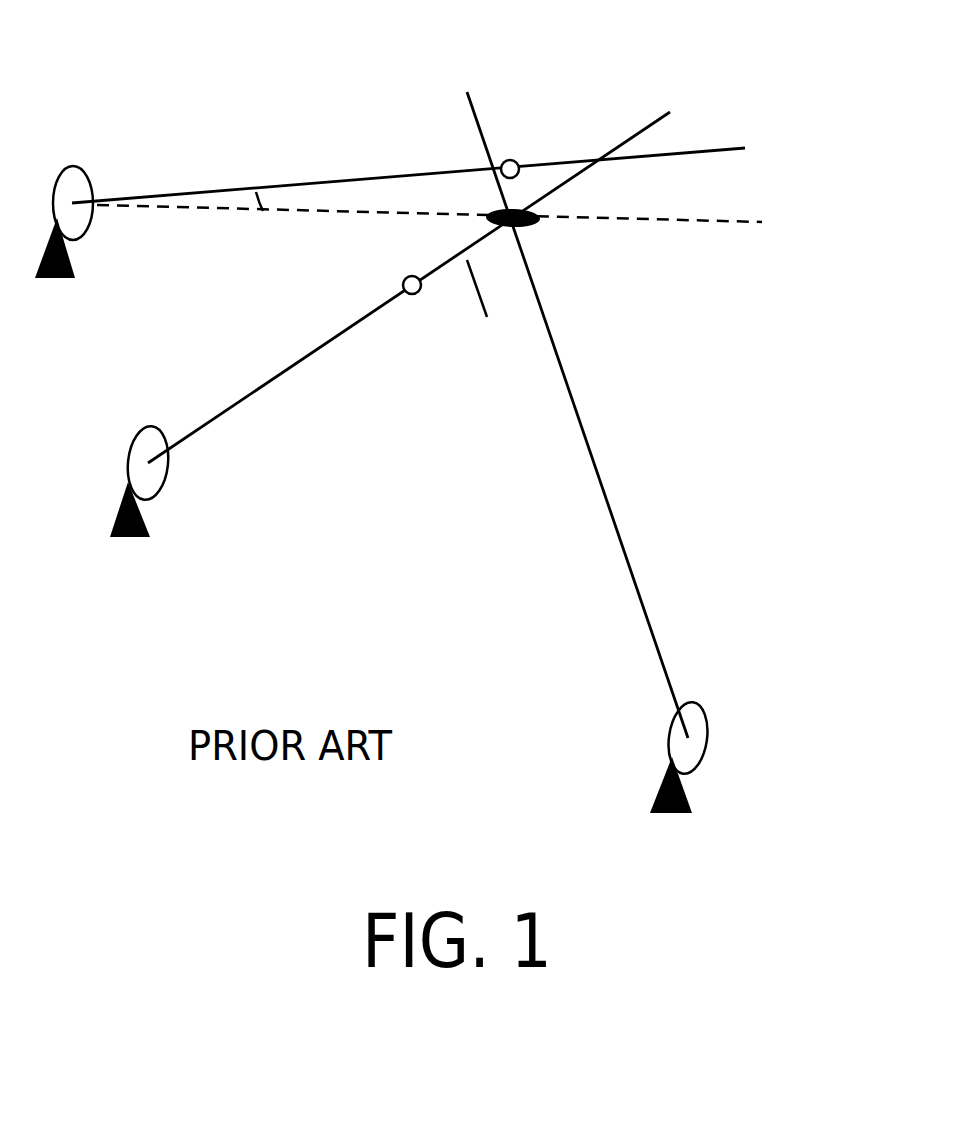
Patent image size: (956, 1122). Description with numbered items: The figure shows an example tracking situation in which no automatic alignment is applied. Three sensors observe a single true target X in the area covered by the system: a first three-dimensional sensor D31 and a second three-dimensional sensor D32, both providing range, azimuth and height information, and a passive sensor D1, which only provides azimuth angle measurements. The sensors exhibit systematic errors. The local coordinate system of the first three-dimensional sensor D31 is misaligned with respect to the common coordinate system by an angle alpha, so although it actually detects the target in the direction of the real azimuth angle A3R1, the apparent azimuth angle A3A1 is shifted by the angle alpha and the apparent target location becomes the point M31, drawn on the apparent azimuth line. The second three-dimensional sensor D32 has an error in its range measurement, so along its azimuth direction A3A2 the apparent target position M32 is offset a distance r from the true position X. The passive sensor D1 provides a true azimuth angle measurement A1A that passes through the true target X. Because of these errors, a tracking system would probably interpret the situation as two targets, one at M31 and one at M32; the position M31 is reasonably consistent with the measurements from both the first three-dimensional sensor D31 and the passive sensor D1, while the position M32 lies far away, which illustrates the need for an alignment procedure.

The first 3D sensor D31 is at (64, 261).
The second 3D sensor D32 is at (141, 518).
The passive sensor D1 is at (681, 786).
The azimuth angle of the passive sensor A1A is at (550, 384).
The azimuth angle of the second 3D sensor A3A2 is at (430, 256).
The apparent azimuth angle of the first 3D sensor A3A1 is at (448, 163).
The real azimuth angle of the first 3D sensor A3R1 is at (470, 232).
The misalignment angle alpha is at (282, 198).
The apparent target location of the first 3D sensor M31 is at (517, 148).
The apparent target position of the second 3D sensor M32 is at (422, 300).
The true target X is at (540, 233).
The range offset distance r is at (483, 307).